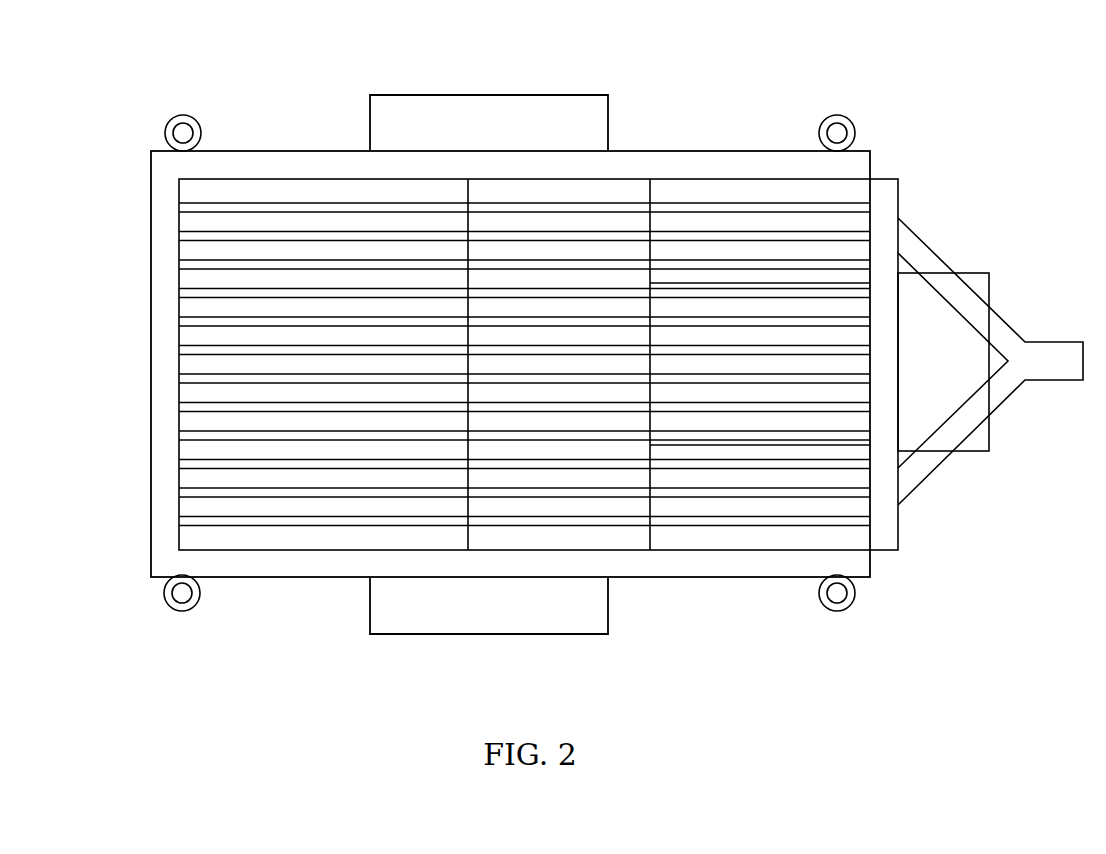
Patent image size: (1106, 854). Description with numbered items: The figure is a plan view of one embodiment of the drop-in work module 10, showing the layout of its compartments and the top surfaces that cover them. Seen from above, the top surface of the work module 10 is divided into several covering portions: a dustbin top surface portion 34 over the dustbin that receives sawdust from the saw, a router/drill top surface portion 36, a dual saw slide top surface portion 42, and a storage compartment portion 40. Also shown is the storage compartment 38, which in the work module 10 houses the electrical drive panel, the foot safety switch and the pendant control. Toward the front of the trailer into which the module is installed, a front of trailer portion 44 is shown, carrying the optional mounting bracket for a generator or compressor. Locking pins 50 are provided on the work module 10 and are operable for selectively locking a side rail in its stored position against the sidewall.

The drop-in work module 10 is at (609, 337).
The dustbin top surface portion 34 is at (322, 348).
The dual saw slide top surface portion 42 is at (541, 348).
The router/drill top surface portion 36 is at (751, 235).
The storage compartment portion 40 is at (751, 348).
The storage compartment 38 is at (751, 492).
The front of trailer portion 44 is at (951, 373).
The locking pins 50 is at (180, 116).